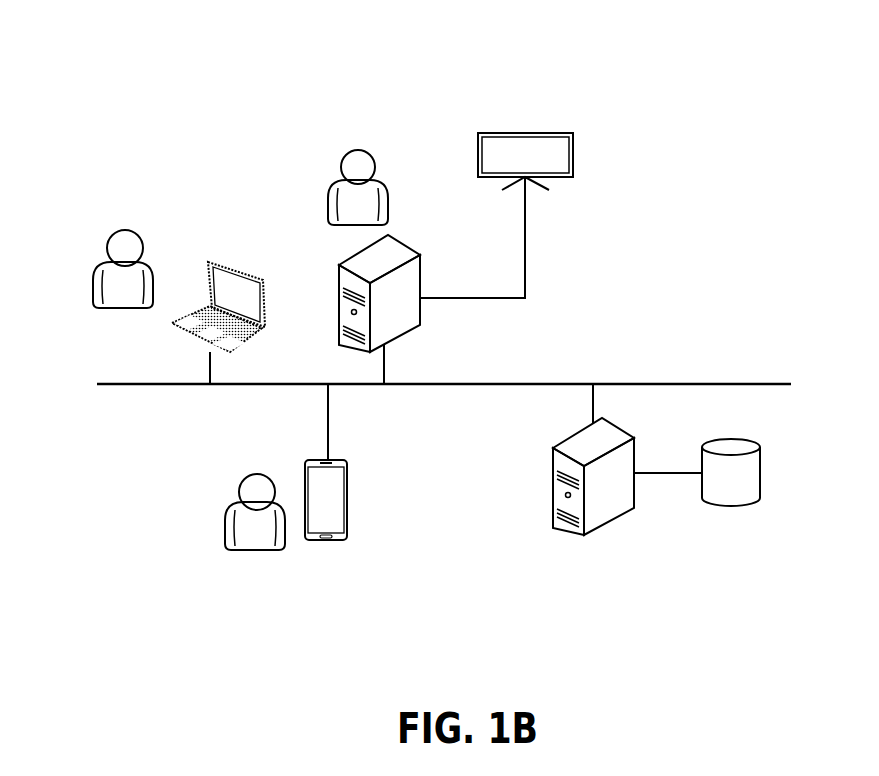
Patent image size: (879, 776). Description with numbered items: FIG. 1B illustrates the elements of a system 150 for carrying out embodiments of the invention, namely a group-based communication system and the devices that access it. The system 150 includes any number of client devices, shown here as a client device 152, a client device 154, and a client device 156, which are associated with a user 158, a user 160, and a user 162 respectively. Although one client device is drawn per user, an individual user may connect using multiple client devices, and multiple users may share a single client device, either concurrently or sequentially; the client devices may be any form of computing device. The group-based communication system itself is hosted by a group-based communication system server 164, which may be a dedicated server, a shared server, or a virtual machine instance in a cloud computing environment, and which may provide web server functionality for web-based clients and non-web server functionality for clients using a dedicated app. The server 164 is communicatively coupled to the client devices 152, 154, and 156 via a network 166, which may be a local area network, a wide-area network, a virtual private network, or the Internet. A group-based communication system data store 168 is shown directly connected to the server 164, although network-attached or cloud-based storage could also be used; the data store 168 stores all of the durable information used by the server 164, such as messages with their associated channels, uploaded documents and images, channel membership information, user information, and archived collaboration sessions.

The system 150 is at (145, 86).
The client device 152 is at (232, 267).
The client device 154 is at (422, 315).
The client device 156 is at (347, 488).
The user 158 is at (133, 232).
The user 160 is at (360, 150).
The user 162 is at (243, 550).
The group-based communication system server 164 is at (602, 530).
The network 166 is at (130, 387).
The group-based communication system data store 168 is at (727, 503).